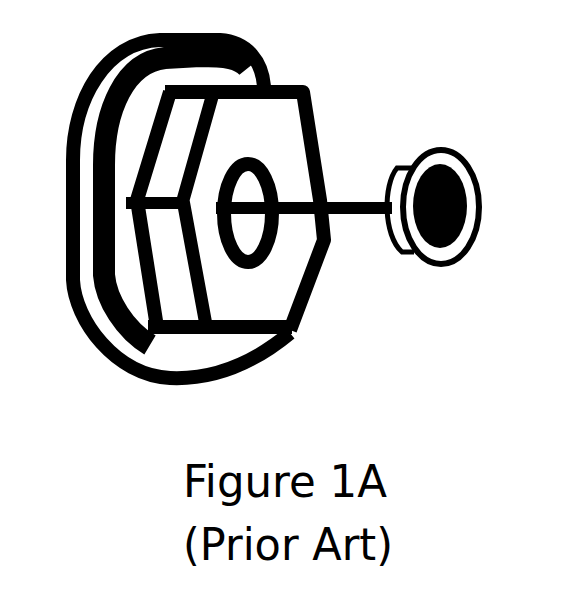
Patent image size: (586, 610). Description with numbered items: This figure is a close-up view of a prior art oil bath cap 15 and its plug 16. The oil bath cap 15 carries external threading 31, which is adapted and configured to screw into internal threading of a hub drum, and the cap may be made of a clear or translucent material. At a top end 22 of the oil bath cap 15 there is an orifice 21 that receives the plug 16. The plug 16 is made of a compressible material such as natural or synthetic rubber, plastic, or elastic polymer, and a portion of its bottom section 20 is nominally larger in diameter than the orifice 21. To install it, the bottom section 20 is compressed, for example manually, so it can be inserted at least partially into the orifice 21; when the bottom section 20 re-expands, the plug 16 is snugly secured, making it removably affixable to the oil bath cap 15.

The oil bath cap 15 is at (283, 107).
The plug 16 is at (470, 200).
The bottom section 20 is at (401, 166).
The orifice 21 is at (253, 193).
The top end 22 is at (292, 337).
The external threading 31 is at (77, 293).